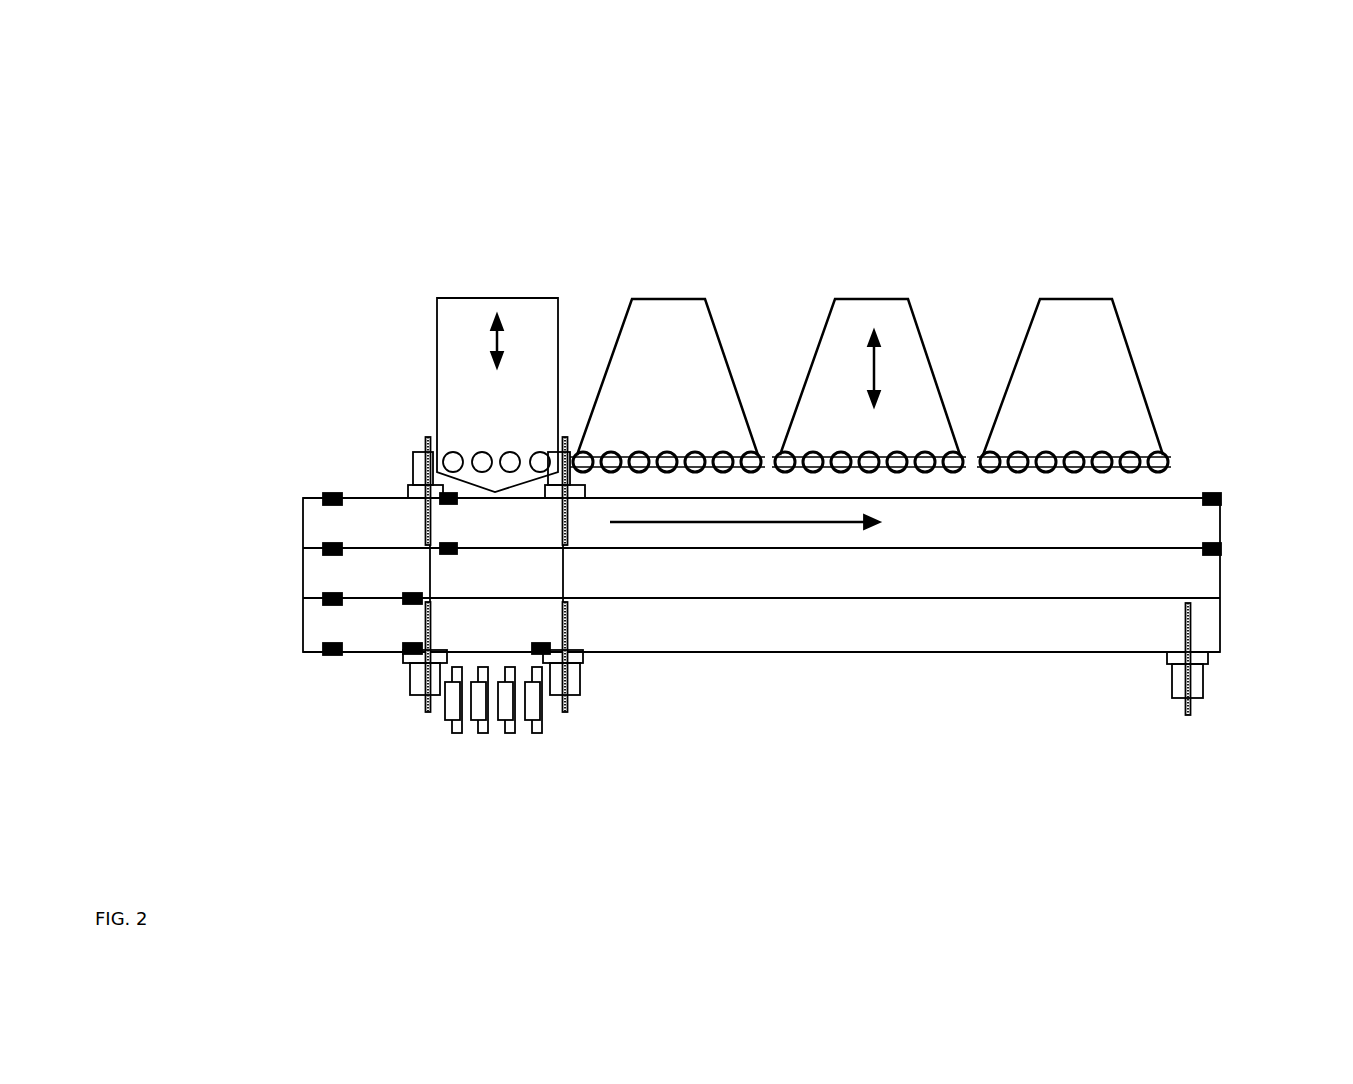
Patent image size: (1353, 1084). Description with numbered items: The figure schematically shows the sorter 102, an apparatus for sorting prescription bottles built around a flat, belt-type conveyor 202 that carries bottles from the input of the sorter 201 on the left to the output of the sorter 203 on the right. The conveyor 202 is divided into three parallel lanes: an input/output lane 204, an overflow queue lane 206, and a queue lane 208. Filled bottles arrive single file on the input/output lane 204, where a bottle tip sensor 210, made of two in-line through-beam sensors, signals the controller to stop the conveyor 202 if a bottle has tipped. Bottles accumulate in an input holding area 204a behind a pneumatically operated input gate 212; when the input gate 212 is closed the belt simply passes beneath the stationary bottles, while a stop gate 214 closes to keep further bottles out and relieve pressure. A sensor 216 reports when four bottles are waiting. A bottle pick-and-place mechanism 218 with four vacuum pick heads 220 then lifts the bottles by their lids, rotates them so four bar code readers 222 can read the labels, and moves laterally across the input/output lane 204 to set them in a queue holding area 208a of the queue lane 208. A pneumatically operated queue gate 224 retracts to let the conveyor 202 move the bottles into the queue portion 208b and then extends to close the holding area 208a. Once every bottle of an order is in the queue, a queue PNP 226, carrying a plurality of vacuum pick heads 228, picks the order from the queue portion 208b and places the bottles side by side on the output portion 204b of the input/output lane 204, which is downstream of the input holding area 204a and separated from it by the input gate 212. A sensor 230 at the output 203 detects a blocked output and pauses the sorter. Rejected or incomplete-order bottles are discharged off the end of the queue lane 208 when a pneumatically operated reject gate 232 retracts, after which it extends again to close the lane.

The sorter 102 is at (544, 136).
The input of the sorter 201 is at (350, 462).
The conveyor 202 is at (262, 497).
The output of the sorter 203 is at (1184, 466).
The input/output lane 204 is at (322, 532).
The input holding area 204a is at (474, 524).
The output portion 204b is at (886, 510).
The overflow queue lane 206 is at (322, 568).
The queue lane 208 is at (322, 618).
The queue holding area 208a is at (472, 624).
The queue portion 208b is at (938, 628).
The bottle tip sensor 210 is at (343, 503).
The input gate 212 is at (577, 500).
The stop gate 214 is at (422, 453).
The sensor 216 is at (428, 502).
The bottle pick-and-place mechanism 218 is at (415, 356).
The pick heads 220 is at (537, 463).
The bar code readers 222 is at (527, 755).
The queue gate 224 is at (576, 690).
The queue PNP 226 is at (669, 278).
The pick heads 228 is at (666, 460).
The sensor 230 is at (1222, 500).
The reject gate 232 is at (1200, 684).